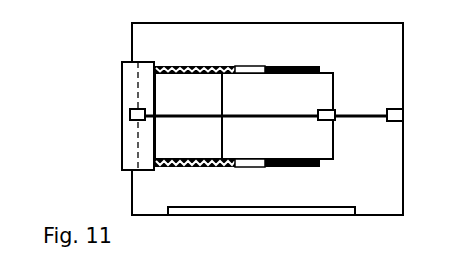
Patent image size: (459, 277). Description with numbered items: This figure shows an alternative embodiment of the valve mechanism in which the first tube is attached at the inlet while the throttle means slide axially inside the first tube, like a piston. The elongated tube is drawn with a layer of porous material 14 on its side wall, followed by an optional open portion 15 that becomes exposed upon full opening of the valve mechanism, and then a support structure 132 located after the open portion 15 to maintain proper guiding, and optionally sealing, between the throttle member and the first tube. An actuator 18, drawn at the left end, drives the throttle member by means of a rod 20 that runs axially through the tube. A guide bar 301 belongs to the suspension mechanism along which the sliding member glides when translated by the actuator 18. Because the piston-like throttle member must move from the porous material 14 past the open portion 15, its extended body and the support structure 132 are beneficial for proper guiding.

The porous material 14 is at (189, 168).
The open portion 15 is at (247, 168).
The actuator 18 is at (130, 120).
The rod 20 is at (225, 113).
The support structure 132 is at (287, 169).
The guide bar 301 is at (295, 151).